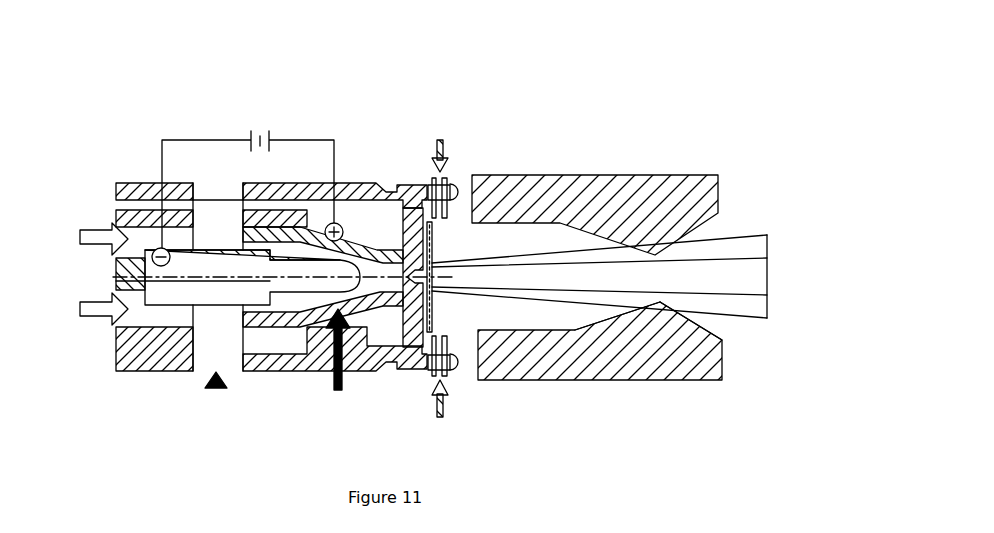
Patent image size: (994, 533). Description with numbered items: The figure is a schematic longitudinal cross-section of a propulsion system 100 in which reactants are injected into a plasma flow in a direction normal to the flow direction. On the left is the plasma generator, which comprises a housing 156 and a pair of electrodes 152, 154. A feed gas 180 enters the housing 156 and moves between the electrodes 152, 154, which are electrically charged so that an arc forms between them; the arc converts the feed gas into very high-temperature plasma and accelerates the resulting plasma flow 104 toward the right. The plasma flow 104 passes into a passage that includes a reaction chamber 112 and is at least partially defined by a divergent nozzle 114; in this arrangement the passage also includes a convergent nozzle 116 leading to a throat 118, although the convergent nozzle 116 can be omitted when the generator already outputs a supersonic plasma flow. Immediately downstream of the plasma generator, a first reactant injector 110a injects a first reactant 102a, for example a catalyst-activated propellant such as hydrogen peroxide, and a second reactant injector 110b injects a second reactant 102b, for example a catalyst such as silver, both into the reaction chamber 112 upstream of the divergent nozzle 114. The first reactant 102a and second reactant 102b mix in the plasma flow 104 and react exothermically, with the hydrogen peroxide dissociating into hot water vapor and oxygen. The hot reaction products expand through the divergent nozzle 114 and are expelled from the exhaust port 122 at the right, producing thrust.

The propulsion system 100 is at (468, 85).
The first reactant 102a is at (443, 152).
The second reactant 102b is at (443, 406).
The plasma flow 104 is at (465, 261).
The first reactant injector 110a is at (458, 196).
The second reactant injector 110b is at (450, 350).
The reaction chamber 112 is at (567, 246).
The divergent nozzle 114 is at (724, 331).
The convergent nozzle 116 is at (611, 324).
The throat 118 is at (659, 308).
The exhaust port 122 is at (736, 248).
The electrode 152 is at (123, 267).
The electrode 154 is at (367, 238).
The housing 156 is at (278, 368).
The feed gas 180 is at (93, 228).